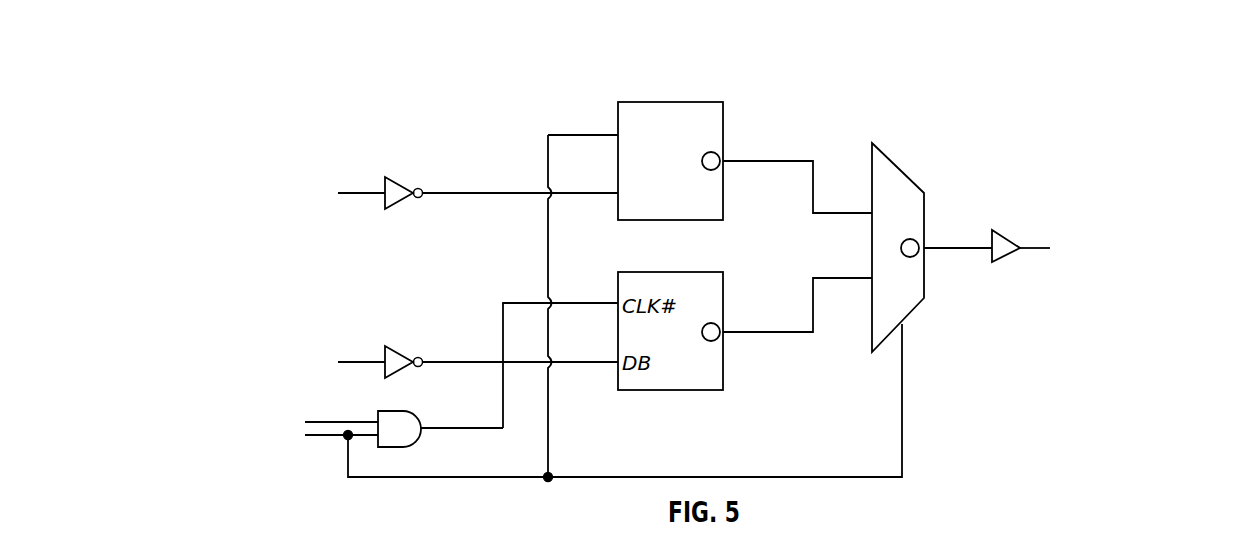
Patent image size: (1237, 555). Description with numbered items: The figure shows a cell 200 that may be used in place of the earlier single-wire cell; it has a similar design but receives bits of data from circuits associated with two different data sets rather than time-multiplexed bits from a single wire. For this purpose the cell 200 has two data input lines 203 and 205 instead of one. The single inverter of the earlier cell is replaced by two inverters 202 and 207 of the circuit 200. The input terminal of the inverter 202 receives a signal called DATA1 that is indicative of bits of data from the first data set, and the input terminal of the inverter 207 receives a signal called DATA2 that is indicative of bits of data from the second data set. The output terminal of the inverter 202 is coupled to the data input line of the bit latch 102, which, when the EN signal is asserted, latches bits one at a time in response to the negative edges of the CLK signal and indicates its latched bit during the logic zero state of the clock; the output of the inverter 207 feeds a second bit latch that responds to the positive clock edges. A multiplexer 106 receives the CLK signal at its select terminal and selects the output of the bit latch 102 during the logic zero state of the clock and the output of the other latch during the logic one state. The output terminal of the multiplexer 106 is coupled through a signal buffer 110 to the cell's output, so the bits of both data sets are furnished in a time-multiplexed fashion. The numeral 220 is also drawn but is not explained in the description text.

The bit latch 102 is at (655, 101).
The multiplexer 106 is at (905, 172).
The signal buffer 110 is at (1006, 232).
The cell 200 is at (820, 99).
The inverter 202 is at (458, 192).
The data input line 203 is at (356, 192).
The data input line 205 is at (357, 361).
The inverter 207 is at (400, 351).
The element 220 is at (1045, 554).